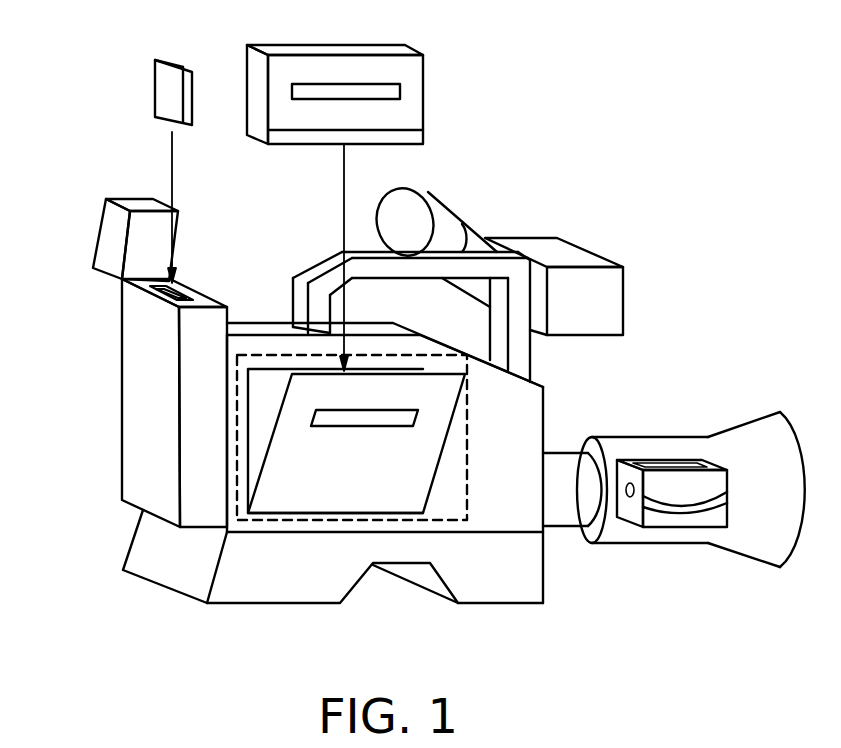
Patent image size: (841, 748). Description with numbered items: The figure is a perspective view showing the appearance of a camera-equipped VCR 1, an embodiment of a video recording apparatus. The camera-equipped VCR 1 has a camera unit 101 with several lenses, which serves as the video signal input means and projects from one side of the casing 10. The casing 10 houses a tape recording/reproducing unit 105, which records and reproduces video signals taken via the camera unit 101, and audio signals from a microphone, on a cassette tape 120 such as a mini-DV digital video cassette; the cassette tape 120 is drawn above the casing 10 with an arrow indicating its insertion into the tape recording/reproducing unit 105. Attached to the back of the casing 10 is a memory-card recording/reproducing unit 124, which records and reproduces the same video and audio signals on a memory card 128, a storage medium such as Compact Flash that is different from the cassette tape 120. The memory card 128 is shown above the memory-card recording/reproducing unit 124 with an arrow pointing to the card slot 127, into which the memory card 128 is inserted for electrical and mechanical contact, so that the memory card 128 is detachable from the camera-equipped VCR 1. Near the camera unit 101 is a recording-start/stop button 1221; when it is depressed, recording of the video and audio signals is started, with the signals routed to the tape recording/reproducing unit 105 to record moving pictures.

The camera-equipped VCR 1 is at (652, 92).
The casing 10 is at (521, 428).
The camera unit 101 is at (658, 433).
The tape recording/reproducing unit 105 is at (282, 518).
The cassette tape 120 is at (424, 68).
The memory-card recording/reproducing unit 124 is at (137, 418).
The card slot 127 is at (157, 295).
The memory card 128 is at (155, 80).
The recording-start/stop button 1221 is at (627, 503).